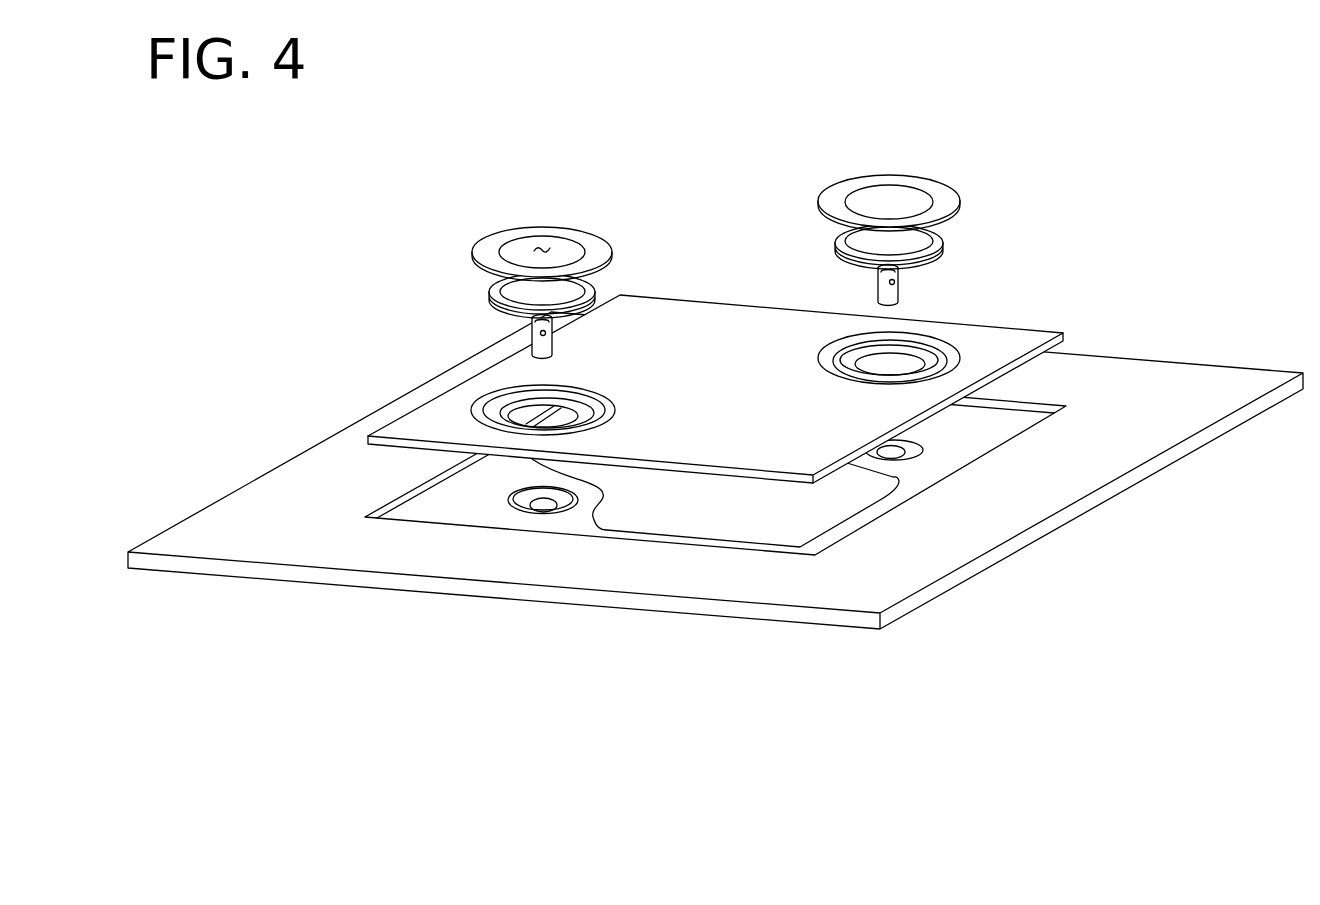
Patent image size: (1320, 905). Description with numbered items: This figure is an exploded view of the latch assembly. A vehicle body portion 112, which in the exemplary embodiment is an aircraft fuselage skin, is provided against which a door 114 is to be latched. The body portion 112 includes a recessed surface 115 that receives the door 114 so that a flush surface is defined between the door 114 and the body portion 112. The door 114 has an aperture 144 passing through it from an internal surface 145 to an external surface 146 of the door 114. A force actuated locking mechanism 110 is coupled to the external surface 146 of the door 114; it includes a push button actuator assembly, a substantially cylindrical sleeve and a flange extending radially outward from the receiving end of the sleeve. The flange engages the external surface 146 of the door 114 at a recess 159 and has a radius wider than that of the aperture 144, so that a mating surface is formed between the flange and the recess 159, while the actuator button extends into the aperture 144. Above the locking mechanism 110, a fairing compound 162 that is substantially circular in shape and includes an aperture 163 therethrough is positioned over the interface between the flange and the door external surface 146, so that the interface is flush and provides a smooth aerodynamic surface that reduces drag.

The force actuated locking mechanism 110 is at (496, 265).
The vehicle body portion 112 is at (1096, 479).
The door 114 is at (1020, 335).
The recessed surface 115 is at (473, 510).
The aperture 144 is at (521, 413).
The internal surface 145 is at (383, 445).
The external surface 146 is at (393, 433).
The recess 159 is at (497, 417).
The fairing compound 162 is at (505, 234).
The aperture 163 is at (548, 247).